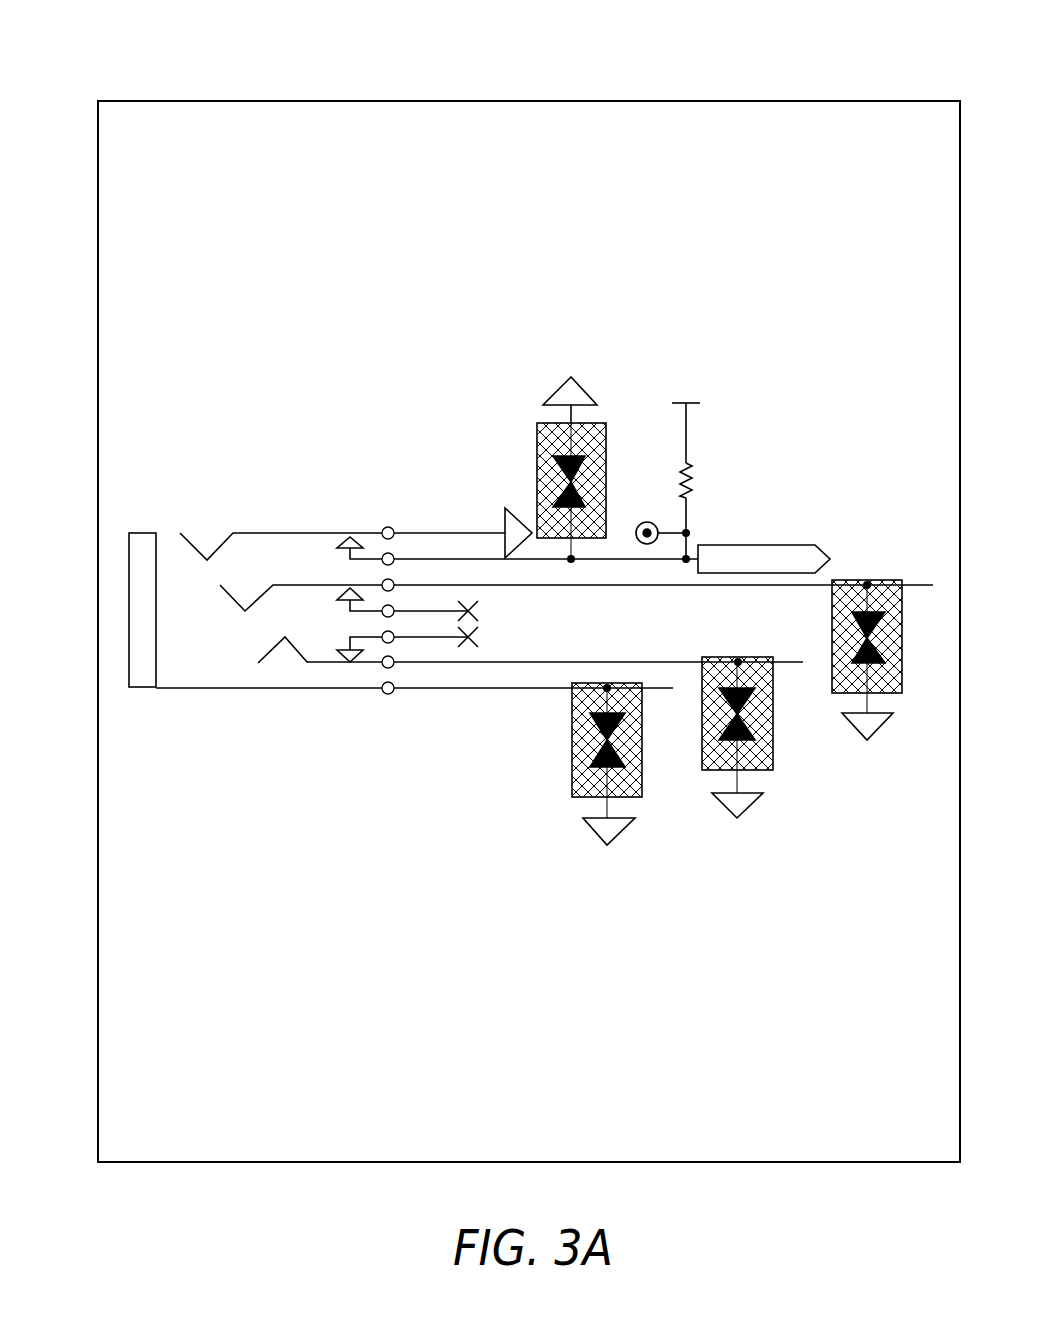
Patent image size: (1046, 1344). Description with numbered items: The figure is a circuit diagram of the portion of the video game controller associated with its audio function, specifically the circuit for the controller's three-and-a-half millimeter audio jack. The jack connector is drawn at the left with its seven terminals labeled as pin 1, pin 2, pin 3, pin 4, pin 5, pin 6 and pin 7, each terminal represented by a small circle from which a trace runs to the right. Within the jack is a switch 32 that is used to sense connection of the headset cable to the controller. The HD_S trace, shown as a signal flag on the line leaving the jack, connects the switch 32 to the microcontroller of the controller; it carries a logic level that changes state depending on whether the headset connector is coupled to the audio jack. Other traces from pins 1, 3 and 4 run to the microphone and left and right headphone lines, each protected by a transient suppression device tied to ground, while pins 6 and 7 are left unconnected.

The switch 32 is at (108, 60).
The jack pin 1 (ground) 1 is at (527, 679).
The jack pin 2 is at (457, 533).
The jack pin 3 (HPR) 3 is at (657, 576).
The jack pin 4 (HPL) 4 is at (592, 653).
The jack pin 5 (HS_D) 5 is at (540, 550).
The jack pin 6 (no connect) 6 is at (430, 604).
The jack pin 7 (no connect) 7 is at (430, 630).